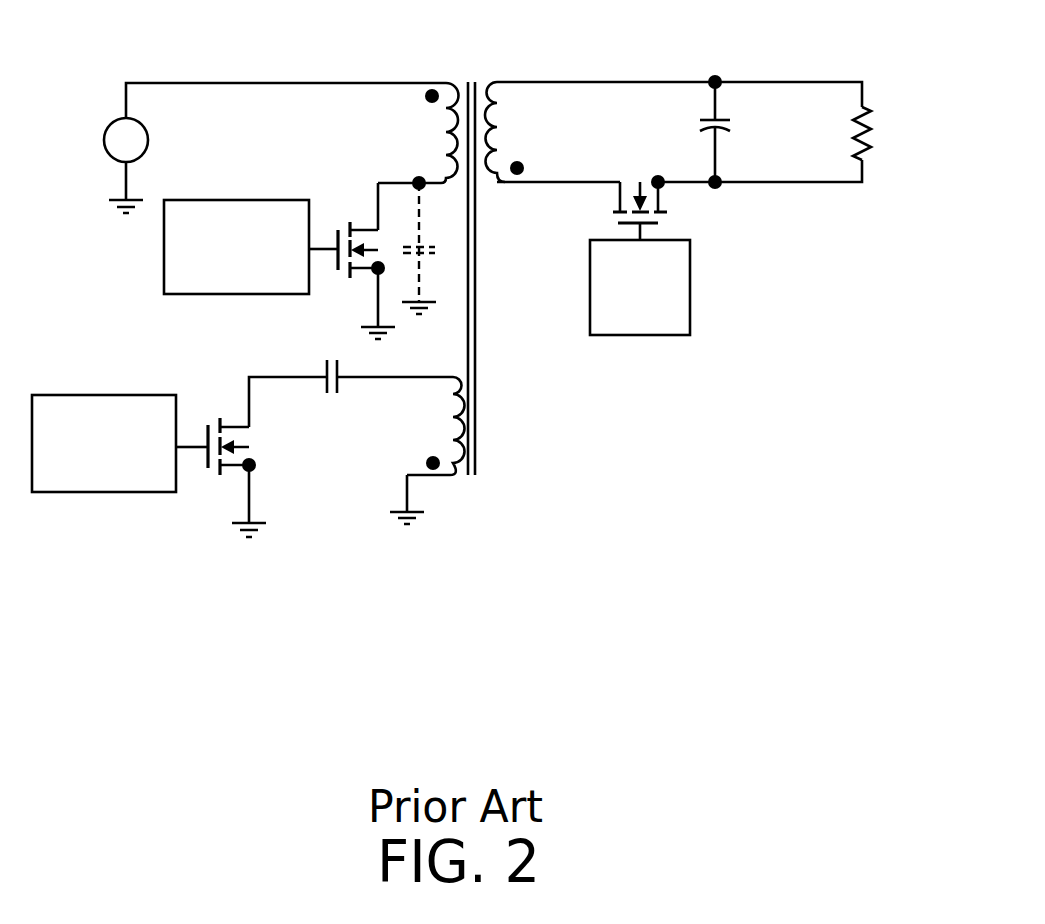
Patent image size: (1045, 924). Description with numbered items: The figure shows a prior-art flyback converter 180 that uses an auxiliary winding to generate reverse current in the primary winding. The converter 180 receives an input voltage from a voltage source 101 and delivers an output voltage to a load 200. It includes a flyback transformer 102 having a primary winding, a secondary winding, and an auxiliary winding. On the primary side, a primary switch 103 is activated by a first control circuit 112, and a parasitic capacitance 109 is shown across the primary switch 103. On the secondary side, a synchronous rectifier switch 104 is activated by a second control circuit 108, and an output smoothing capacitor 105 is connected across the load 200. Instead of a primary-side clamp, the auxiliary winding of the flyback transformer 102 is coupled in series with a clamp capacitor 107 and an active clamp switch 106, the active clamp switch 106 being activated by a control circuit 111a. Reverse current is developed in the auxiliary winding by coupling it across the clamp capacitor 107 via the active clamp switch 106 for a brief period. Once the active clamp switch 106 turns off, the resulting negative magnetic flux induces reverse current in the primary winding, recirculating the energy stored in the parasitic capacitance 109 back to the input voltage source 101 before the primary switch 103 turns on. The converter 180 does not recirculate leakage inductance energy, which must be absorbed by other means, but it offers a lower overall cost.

The converter 180 is at (283, 31).
The voltage source 101 is at (148, 140).
The flyback transformer 102 is at (473, 70).
The primary switch 103 is at (356, 230).
The synchronous rectifier switch 104 is at (642, 178).
The output smoothing capacitor 105 is at (732, 125).
The active clamp switch 106 is at (222, 425).
The clamp capacitor 107 is at (330, 402).
The second control circuit 108 is at (690, 280).
The parasitic capacitance 109 is at (427, 253).
The control circuit 111a is at (87, 395).
The first control circuit 112 is at (230, 200).
The load 200 is at (862, 98).